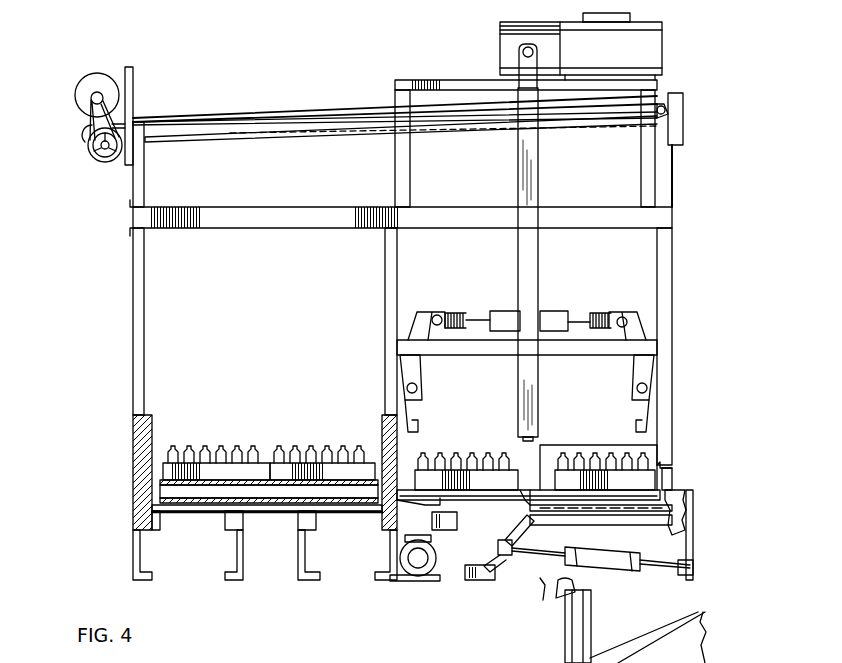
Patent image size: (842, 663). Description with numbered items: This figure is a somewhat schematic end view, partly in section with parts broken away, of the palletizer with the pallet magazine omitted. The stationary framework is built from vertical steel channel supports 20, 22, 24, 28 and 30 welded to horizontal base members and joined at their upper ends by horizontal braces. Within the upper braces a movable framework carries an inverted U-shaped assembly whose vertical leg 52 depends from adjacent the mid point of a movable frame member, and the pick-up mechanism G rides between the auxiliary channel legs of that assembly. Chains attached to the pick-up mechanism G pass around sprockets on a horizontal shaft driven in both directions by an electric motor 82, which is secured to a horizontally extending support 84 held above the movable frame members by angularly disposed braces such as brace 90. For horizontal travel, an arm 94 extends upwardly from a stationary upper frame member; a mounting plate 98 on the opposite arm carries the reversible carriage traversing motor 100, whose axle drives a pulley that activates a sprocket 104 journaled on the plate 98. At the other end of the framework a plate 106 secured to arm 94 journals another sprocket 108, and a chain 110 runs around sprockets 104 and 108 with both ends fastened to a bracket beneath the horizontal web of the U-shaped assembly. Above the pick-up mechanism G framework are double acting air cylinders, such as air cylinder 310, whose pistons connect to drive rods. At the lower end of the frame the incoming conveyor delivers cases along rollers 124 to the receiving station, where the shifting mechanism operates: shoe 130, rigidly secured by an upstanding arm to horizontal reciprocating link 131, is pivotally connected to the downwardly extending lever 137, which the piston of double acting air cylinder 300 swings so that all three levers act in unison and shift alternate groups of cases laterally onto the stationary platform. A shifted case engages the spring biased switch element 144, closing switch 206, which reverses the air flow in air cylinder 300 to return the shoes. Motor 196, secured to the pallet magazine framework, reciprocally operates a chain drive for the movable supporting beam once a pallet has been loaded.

The vertical steel channel support 20 is at (668, 290).
The vertical steel channel support 22 is at (386, 320).
The vertical steel channel support 24 is at (140, 336).
The vertical steel channel support 28 is at (590, 630).
The vertical steel channel support 30 is at (688, 637).
The vertical leg 52 is at (538, 276).
The electric motor 82 is at (662, 47).
The horizontally extending support 84 is at (440, 82).
The angularly disposed brace 90 is at (645, 172).
The arm 94 is at (672, 185).
The mounting plate 98 is at (133, 92).
The carriage traversing motor 100 is at (83, 97).
The sprocket 104 is at (90, 152).
The plate 106 is at (683, 119).
The sprocket 108 is at (662, 108).
The chain 110 is at (330, 107).
The rollers 124 is at (640, 495).
The laterally shiftable shoe 130 is at (672, 480).
The horizontal reciprocating link 131 is at (595, 516).
The downwardly extending lever 137 is at (512, 527).
The spring biased switch element 144 is at (440, 502).
The motor 196 is at (425, 582).
The switch 206 is at (455, 530).
The double acting air cylinder 300 is at (590, 562).
The double acting air cylinder 310 is at (558, 320).
The pick-up mechanism G is at (460, 303).